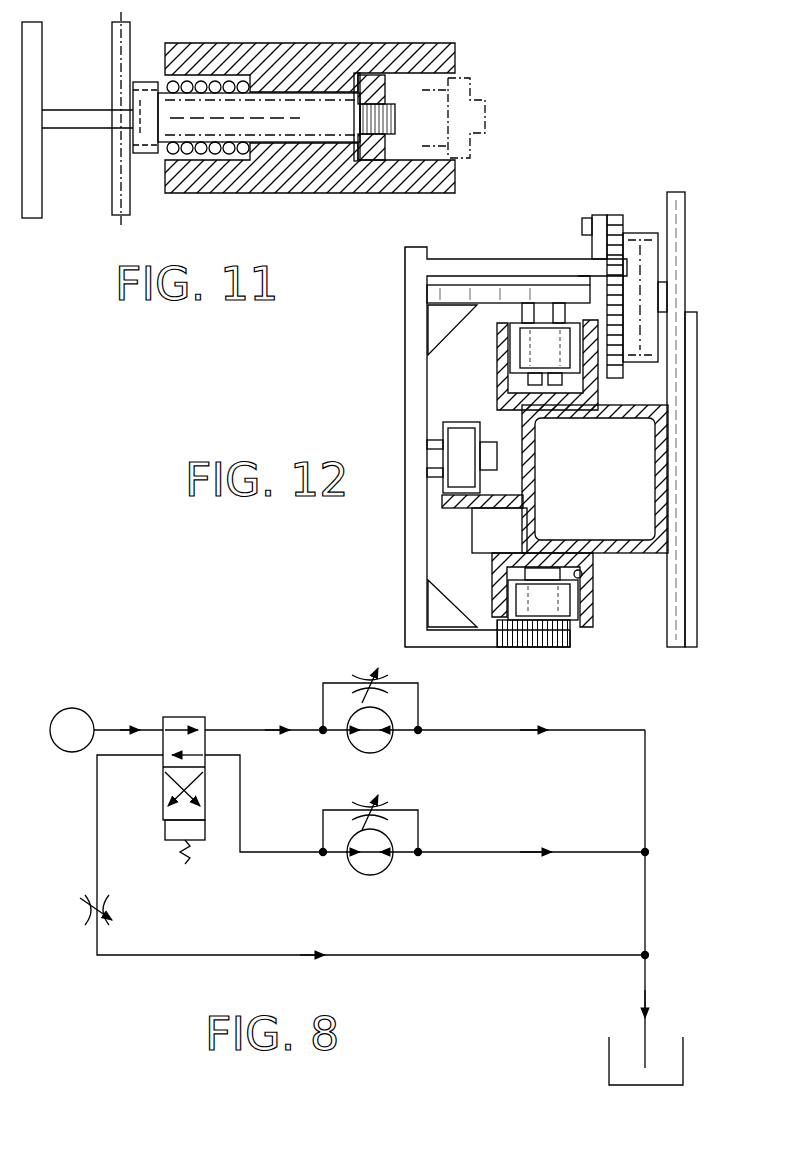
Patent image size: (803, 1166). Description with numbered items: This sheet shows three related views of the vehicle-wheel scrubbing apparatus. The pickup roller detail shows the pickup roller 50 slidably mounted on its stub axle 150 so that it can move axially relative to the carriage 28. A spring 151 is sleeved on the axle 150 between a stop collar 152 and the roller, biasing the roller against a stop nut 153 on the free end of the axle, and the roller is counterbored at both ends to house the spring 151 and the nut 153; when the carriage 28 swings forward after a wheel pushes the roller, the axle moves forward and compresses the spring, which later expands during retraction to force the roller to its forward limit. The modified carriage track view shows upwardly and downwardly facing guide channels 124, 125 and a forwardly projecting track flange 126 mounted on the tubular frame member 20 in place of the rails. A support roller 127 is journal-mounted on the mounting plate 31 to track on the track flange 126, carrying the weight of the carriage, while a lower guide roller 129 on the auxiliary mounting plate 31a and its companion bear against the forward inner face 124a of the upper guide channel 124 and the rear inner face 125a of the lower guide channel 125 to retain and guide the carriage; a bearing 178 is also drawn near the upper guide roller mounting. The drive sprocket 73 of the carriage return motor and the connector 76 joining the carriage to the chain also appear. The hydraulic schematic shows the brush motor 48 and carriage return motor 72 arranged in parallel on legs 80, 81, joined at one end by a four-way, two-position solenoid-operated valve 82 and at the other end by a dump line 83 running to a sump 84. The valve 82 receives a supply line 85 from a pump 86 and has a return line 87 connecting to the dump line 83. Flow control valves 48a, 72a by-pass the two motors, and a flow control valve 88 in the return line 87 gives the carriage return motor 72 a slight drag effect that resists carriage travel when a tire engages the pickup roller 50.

In FIG. 11, the carriage 28 is at (45, 230).
In FIG. 12, the carriage 28 is at (395, 326).
In FIG. 11, the stop collar 152 is at (133, 98).
In FIG. 11, the stop nut 153 is at (370, 80).
In FIG. 11, the spring 151 is at (222, 155).
In FIG. 11, the stub axle 150 is at (285, 142).
In FIG. 11, the pickup roller 50 is at (360, 180).
In FIG. 12, the mounting plate 31 is at (405, 396).
In FIG. 12, the auxiliary mounting plate 31a is at (505, 290).
In FIG. 12, the connector 76 is at (595, 240).
In FIG. 12, the drive sprocket 73 is at (640, 233).
In FIG. 12, the bearing 178 is at (515, 350).
In FIG. 12, the forward inner face 124a is at (512, 380).
In FIG. 12, the upper guide channel 124 is at (505, 398).
In FIG. 12, the support roller 127 is at (447, 450).
In FIG. 12, the tubular frame member 20 is at (533, 462).
In FIG. 12, the track flange 126 is at (468, 508).
In FIG. 12, the lower guide channel 125 is at (495, 576).
In FIG. 12, the rear inner face 125a is at (584, 577).
In FIG. 12, the lower guide roller 129 is at (578, 606).
In FIG. 8, the pump 86 is at (72, 708).
In FIG. 8, the supply line 85 is at (147, 728).
In FIG. 8, the solenoid-operated valve 82 is at (192, 717).
In FIG. 8, the parallel leg 80 is at (258, 728).
In FIG. 8, the flow control valve 48a is at (365, 675).
In FIG. 8, the brush motor 48 is at (386, 742).
In FIG. 8, the flow control valve 72a is at (387, 803).
In FIG. 8, the carriage return motor 72 is at (385, 870).
In FIG. 8, the parallel leg 81 is at (290, 853).
In FIG. 8, the dump line 83 is at (648, 870).
In FIG. 8, the sump 84 is at (609, 1062).
In FIG. 8, the return line 87 is at (97, 838).
In FIG. 8, the flow control valve 88 is at (88, 916).